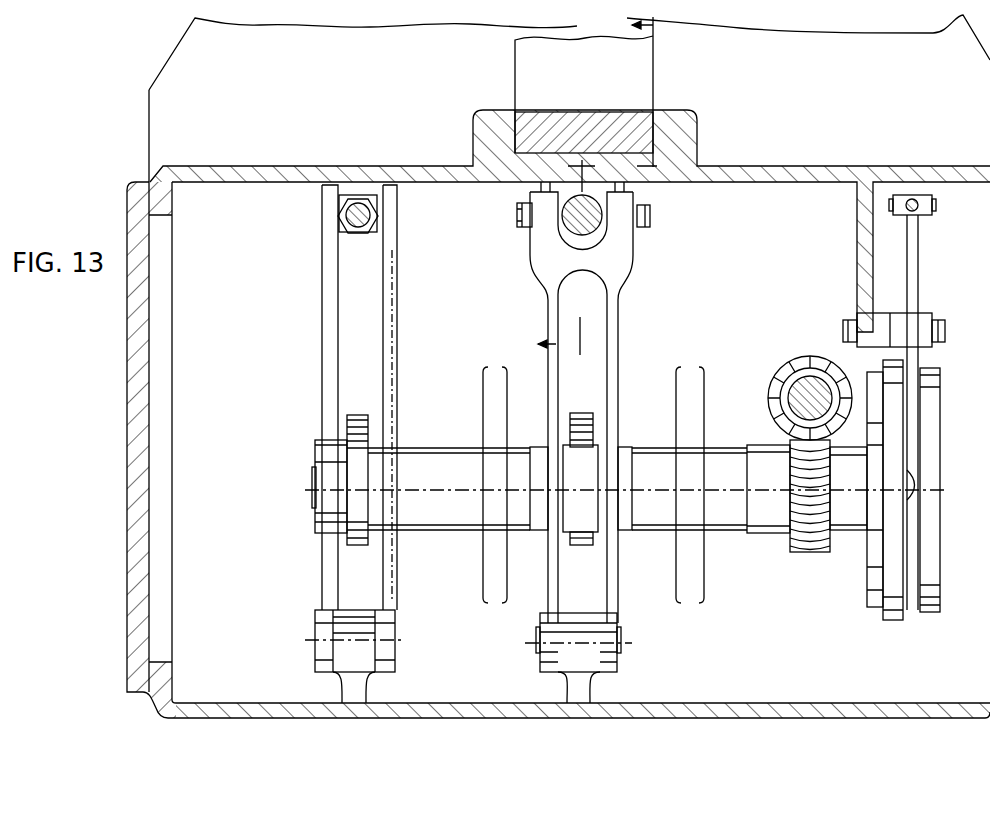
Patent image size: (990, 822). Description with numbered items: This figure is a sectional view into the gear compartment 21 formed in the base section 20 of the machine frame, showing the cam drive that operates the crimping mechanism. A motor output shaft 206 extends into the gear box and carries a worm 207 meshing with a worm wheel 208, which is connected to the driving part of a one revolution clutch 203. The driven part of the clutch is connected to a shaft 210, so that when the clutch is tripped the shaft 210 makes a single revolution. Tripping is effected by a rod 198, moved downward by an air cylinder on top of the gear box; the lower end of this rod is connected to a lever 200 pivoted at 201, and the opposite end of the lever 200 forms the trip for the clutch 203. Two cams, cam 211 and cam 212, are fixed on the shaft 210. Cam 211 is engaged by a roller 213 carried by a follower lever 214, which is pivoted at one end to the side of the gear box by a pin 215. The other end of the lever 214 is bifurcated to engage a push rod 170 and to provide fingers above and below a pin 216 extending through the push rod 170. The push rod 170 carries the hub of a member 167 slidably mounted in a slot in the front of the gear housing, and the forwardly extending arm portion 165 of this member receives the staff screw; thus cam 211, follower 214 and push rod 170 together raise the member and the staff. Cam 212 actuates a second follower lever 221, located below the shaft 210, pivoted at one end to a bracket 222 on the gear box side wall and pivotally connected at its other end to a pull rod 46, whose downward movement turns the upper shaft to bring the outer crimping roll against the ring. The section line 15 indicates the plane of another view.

The section line 15- 15 is at (584, 183).
The base section 20 is at (803, 102).
The gear compartment 21 is at (799, 176).
The pull rod 46 is at (367, 221).
The arm portion 165 is at (607, 91).
The member 167 is at (616, 124).
The push rod 170 is at (567, 216).
The rod 198 is at (914, 208).
The lever 200 is at (908, 277).
The pivot 201 is at (944, 333).
The one revolution clutch 203 is at (933, 540).
The output shaft 206 is at (798, 394).
The worm 207 is at (828, 365).
The worm wheel 208 is at (797, 542).
The shaft 210 is at (312, 483).
The cam 211 is at (579, 541).
The cam 212 is at (358, 477).
The roller 213 is at (583, 498).
The follower lever 214 is at (610, 327).
The pin 215 is at (538, 640).
The pin 216 is at (513, 213).
The follower lever 221 is at (386, 339).
The bracket 222 is at (367, 663).